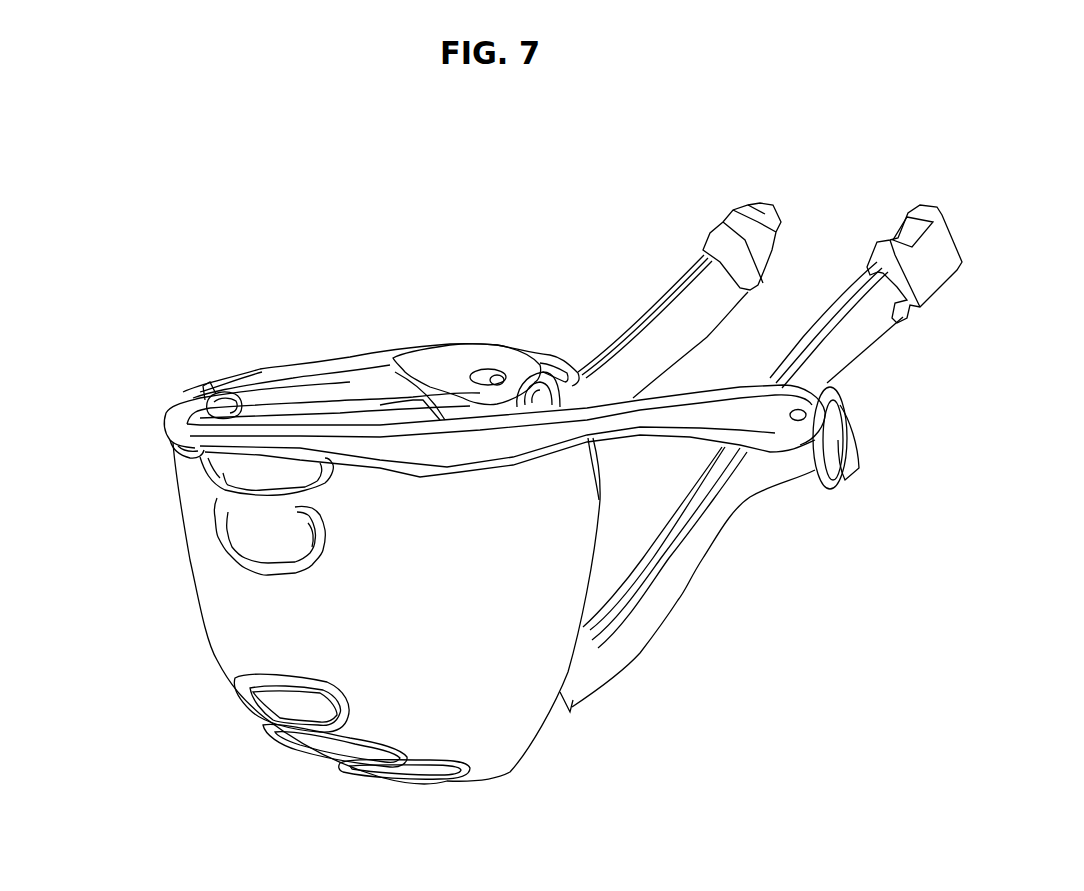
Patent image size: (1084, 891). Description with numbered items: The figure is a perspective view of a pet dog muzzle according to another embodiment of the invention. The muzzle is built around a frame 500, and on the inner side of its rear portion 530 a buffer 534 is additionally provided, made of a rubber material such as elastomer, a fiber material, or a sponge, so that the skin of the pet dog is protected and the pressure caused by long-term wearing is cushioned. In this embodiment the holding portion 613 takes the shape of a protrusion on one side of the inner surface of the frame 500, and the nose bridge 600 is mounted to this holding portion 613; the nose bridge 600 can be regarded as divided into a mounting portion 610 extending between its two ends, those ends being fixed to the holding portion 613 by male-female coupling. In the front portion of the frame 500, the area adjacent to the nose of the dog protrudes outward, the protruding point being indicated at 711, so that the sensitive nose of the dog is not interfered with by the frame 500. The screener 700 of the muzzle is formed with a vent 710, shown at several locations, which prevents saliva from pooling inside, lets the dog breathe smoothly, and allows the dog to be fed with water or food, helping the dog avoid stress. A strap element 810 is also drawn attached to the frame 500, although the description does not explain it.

The frame 500 is at (413, 485).
The rear portion 530 is at (437, 346).
The buffer 534 is at (397, 358).
The nose bridge 600 is at (238, 365).
The mounting portion 610 is at (295, 377).
The holding portion 613 is at (223, 403).
The screener 700 is at (505, 743).
The vent 710 is at (250, 467).
The protruding point 711 is at (167, 432).
The chin strap 810 is at (643, 575).